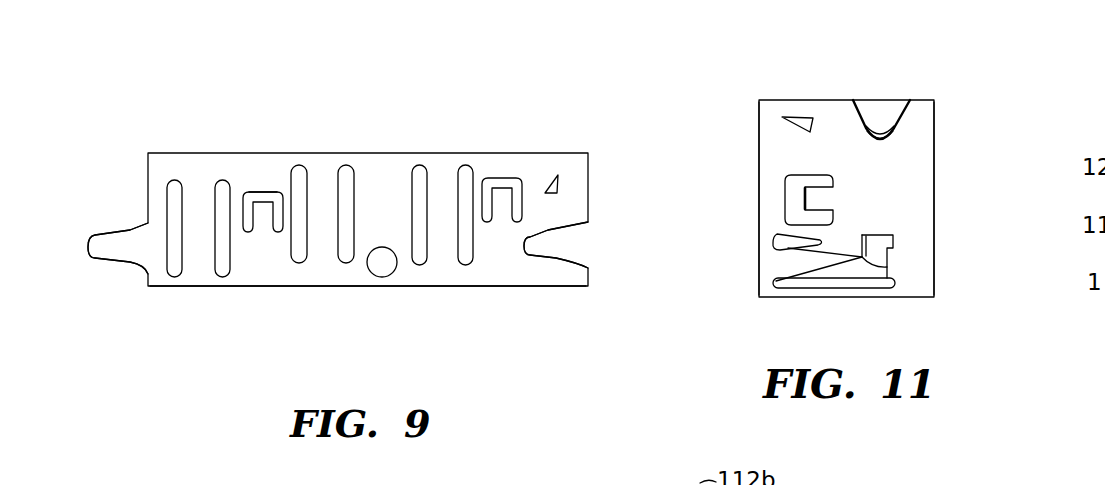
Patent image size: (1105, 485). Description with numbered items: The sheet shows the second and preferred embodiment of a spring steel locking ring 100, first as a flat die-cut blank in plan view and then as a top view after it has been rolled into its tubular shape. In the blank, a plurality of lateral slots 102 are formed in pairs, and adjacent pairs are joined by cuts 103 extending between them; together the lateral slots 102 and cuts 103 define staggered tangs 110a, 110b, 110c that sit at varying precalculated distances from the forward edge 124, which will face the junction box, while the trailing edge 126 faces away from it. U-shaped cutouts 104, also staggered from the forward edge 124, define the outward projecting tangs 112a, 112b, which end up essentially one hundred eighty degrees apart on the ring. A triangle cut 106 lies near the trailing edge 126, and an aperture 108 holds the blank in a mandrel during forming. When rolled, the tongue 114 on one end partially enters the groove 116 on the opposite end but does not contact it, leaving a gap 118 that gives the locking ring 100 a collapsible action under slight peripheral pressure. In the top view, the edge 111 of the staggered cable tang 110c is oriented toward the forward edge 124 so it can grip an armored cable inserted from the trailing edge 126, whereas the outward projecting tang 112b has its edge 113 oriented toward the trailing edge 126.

In FIG. 9, the spring steel locking ring 100 is at (415, 82).
In FIG. 11, the spring steel locking ring 100 is at (955, 83).
In FIG. 9, the lateral slots 102 is at (174, 180).
In FIG. 9, the cuts 103 is at (437, 236).
In FIG. 9, the U-shaped cutouts 104 is at (265, 192).
In FIG. 9, the triangle cut 106 is at (555, 183).
In FIG. 11, the triangle cut 106 is at (805, 115).
In FIG. 9, the aperture 108 is at (383, 268).
In FIG. 9, the staggered tang 110a is at (201, 252).
In FIG. 9, the staggered tang 110b is at (321, 243).
In FIG. 9, the staggered cable tang 110c is at (441, 210).
In FIG. 11, the staggered cable tang 110c is at (807, 255).
In FIG. 11, the edge of staggered cable tang 111 is at (887, 267).
In FIG. 9, the outward projecting tang 112a is at (262, 213).
In FIG. 9, the outward projecting tang 112b is at (498, 204).
In FIG. 11, the outward projecting tang 112b is at (822, 195).
In FIG. 11, the edge of outward projecting tang 113 is at (803, 195).
In FIG. 9, the tongue 114 is at (127, 240).
In FIG. 11, the tongue 114 is at (882, 108).
In FIG. 9, the groove 116 is at (530, 246).
In FIG. 11, the gap 118 is at (880, 140).
In FIG. 9, the forward edge 124 is at (492, 287).
In FIG. 11, the forward edge 124 is at (934, 205).
In FIG. 9, the trailing edge 126 is at (298, 165).
In FIG. 11, the trailing edge 126 is at (758, 272).